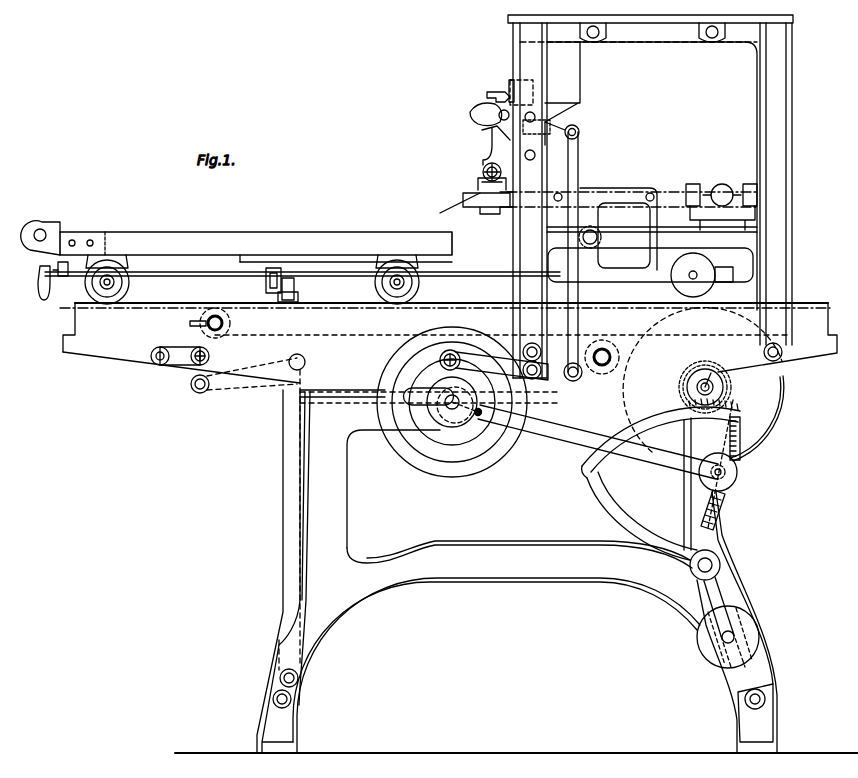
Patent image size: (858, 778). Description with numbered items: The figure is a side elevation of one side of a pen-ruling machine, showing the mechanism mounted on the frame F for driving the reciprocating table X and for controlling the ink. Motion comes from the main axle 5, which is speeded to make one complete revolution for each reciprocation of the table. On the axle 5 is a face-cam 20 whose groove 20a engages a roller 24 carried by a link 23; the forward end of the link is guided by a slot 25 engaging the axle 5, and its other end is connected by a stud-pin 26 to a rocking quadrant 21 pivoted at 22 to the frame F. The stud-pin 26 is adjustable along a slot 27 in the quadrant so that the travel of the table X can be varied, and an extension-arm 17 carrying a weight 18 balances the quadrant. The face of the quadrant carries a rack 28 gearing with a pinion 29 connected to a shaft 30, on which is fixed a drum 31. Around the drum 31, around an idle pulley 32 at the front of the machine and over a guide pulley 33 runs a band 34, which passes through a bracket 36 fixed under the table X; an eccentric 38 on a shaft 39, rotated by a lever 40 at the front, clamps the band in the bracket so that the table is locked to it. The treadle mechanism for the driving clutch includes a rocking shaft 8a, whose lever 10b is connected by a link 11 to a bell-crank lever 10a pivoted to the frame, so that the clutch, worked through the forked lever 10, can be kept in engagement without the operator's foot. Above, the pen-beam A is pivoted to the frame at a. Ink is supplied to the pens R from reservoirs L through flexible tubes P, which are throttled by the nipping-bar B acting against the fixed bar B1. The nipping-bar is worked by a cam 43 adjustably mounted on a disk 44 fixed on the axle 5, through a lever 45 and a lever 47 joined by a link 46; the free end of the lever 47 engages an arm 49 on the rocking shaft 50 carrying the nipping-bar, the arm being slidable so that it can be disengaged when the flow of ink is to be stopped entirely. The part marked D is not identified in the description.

The reciprocating table X is at (165, 246).
The shaft 39 is at (186, 278).
The lever 40 is at (53, 283).
The eccentric 38 is at (267, 283).
The bracket 36 is at (290, 292).
The idle pulley or drum 32 is at (232, 325).
The guide pulley or drum 33 is at (605, 346).
The band 34 is at (312, 350).
The frame F is at (520, 266).
The forked lever 10 is at (173, 365).
The bell-crank lever 10a is at (198, 386).
The link 11 is at (218, 384).
The lever 10b is at (290, 495).
The rocking shaft 8a is at (279, 676).
The face-cam 20 is at (455, 475).
The groove 20a is at (388, 415).
The axle 5 is at (458, 410).
The disk 44 is at (438, 422).
The roller 24 is at (482, 418).
The slot 25 is at (420, 395).
The lever 45 is at (462, 362).
The cam 43 is at (476, 380).
The link 23 is at (565, 437).
The rocking quadrant 21 is at (640, 500).
The pivot 22 is at (700, 566).
The extension-arm 17 is at (712, 598).
The weight 18 is at (702, 649).
The stud-pin 26 is at (738, 470).
The slot 27 is at (728, 514).
The rack 28 is at (730, 406).
The pinion 29 is at (728, 383).
The shaft or axle 30 is at (710, 380).
The drum 31 is at (783, 392).
The pivot a is at (598, 238).
The link 46 is at (566, 290).
The lever 47 is at (566, 138).
The arm 49 is at (515, 136).
The rocking shaft 50 is at (490, 96).
The reservoirs L is at (508, 88).
The nipping-bar B is at (480, 115).
The fixed bar B1 is at (482, 134).
The flexible tubes P is at (480, 160).
The dog D is at (470, 195).
The pens R is at (438, 205).
The pen-beam A is at (503, 212).